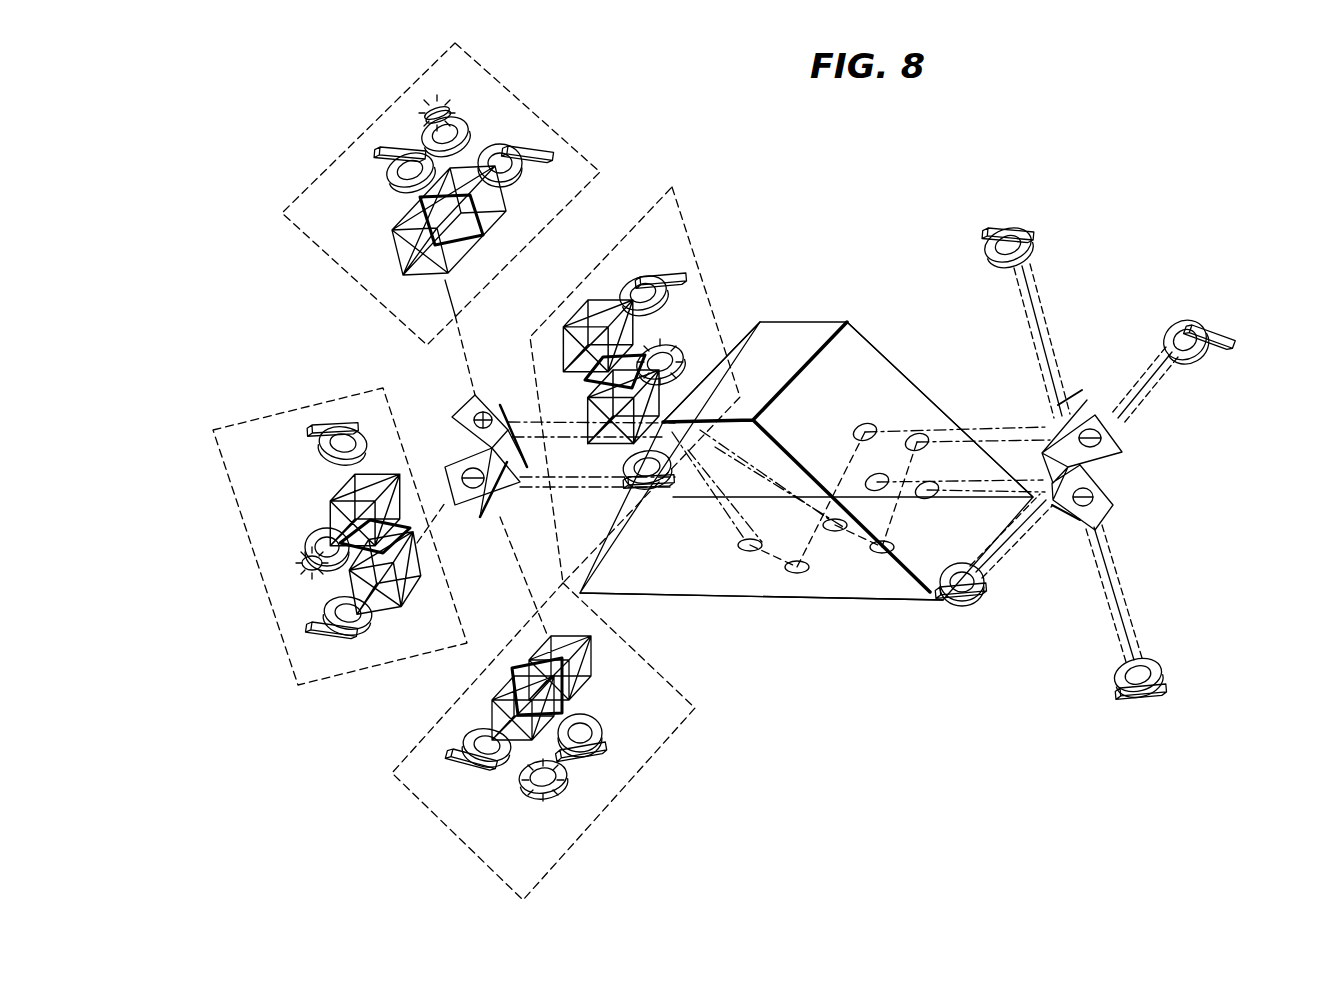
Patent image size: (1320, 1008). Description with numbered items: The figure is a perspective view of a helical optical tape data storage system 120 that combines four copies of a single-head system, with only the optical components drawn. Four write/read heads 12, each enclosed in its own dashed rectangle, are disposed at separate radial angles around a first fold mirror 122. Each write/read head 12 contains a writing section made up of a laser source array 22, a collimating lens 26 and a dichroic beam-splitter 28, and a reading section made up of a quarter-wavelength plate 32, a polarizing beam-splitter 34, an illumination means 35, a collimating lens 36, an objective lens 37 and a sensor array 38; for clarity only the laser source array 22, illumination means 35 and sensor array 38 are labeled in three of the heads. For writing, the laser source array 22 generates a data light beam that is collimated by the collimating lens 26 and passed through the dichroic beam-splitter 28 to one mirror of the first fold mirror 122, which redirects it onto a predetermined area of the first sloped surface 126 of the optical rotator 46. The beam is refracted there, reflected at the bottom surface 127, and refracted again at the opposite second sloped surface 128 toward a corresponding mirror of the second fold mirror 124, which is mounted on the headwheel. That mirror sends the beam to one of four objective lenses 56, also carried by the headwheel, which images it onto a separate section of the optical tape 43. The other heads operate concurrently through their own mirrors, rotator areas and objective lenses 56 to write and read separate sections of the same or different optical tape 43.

The write/read head 12 is at (503, 86).
The laser source array 22 is at (528, 157).
The collimating lens 26 is at (328, 610).
The dichroic beam-splitter 28 is at (408, 593).
The quarter-wavelength plate 32 is at (415, 510).
The polarizing beam-splitter 34 is at (362, 483).
The illumination means 35 is at (435, 104).
The collimating lens 36 is at (310, 538).
The objective lens 37 is at (320, 443).
The sensor array 38 is at (392, 147).
The optical tape 43 is at (990, 232).
The optical rotator 46 is at (820, 322).
The objective lens 56 is at (1035, 242).
The helical optical tape data storage system 120 is at (818, 147).
The first fold mirror 122 is at (482, 400).
The second fold mirror 124 is at (1072, 420).
The first sloped surface 126 is at (740, 328).
The bottom surface 127 is at (825, 585).
The second sloped surface 128 is at (870, 380).